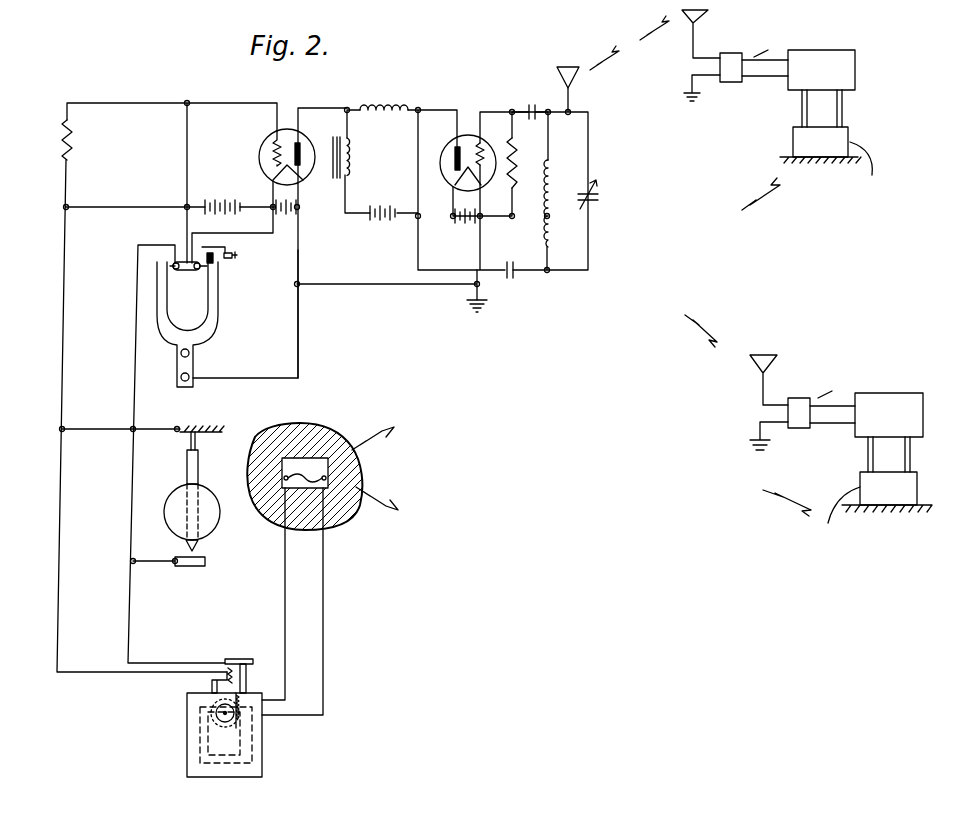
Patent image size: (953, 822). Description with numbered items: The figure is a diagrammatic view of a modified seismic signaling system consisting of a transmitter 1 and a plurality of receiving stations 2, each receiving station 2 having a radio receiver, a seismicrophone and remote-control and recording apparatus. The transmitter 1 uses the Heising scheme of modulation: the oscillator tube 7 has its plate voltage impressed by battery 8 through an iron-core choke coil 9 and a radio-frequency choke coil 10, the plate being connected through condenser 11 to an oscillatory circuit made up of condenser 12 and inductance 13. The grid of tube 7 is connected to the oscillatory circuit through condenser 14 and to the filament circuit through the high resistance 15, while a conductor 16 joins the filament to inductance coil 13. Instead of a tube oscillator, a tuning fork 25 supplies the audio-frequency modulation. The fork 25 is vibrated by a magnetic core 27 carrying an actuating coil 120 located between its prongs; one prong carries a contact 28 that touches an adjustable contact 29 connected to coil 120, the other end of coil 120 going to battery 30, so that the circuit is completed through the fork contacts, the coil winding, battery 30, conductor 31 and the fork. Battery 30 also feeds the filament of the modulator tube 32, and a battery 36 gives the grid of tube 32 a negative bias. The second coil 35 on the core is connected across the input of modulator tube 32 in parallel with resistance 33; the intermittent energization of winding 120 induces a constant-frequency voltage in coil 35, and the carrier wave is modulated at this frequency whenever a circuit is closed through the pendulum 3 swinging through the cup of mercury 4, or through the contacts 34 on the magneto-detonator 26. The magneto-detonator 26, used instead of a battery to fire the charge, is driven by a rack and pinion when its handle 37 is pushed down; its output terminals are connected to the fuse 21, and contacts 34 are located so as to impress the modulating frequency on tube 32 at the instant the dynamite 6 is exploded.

The transmitter 1 is at (448, 95).
The receiving station 2 is at (836, 33).
The pendulum 3 is at (200, 548).
The cup 4 is at (205, 559).
The dynamite 6 is at (295, 586).
The oscillator tube 7 is at (452, 150).
The battery 8 is at (393, 208).
The iron-core choke coil 9 is at (357, 155).
The radio-frequency choke coil 10 is at (386, 118).
The condenser 11 is at (516, 276).
The condenser 12 is at (598, 205).
The inductance 13 is at (553, 230).
The condenser 14 is at (533, 120).
The high resistance 15 is at (513, 181).
The conductor 16 is at (490, 220).
The fuse 21 is at (303, 475).
The tuning fork 25 is at (182, 340).
The magneto-detonator 26 is at (167, 742).
The magnetic core 27 is at (187, 272).
The contact 28 is at (215, 259).
The adjustable contact 29 is at (233, 252).
The battery 30 is at (285, 220).
The conductor 31 is at (298, 337).
The modulator tube 32 is at (262, 155).
The resistance 33 is at (80, 145).
The contacts 34 is at (240, 680).
The coil 35 is at (172, 273).
The battery 36 is at (225, 197).
The handle 37 is at (236, 659).
The actuating coil 120 is at (200, 273).